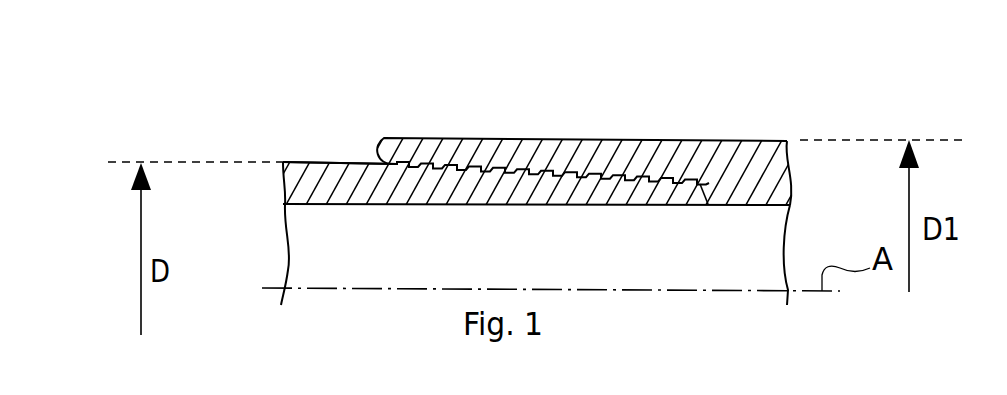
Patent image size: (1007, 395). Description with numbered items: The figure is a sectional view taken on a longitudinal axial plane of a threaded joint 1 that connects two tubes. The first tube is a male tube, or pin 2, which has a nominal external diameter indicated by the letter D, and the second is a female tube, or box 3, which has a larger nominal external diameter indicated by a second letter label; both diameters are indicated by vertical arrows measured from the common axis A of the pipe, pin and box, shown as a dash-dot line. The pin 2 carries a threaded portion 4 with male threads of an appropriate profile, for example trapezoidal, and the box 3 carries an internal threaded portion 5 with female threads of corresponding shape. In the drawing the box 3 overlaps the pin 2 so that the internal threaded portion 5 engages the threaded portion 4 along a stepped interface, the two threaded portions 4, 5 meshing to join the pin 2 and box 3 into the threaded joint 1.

The threaded joint 1 is at (806, 96).
The pin 2 is at (283, 186).
The box 3 is at (789, 153).
The threaded portion 4 is at (592, 176).
The internal threaded portion 5 is at (600, 172).